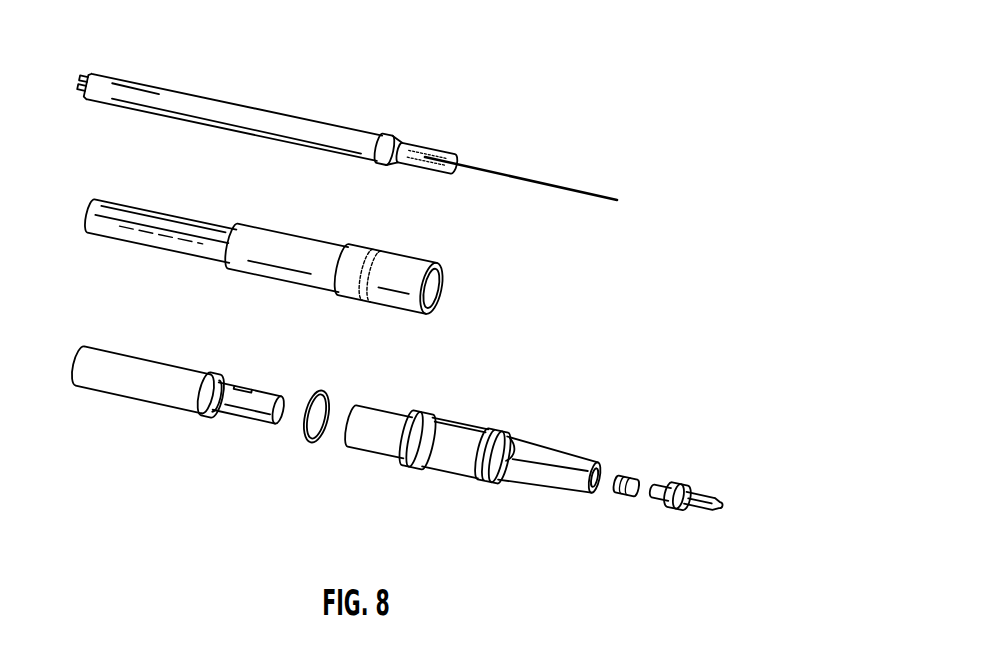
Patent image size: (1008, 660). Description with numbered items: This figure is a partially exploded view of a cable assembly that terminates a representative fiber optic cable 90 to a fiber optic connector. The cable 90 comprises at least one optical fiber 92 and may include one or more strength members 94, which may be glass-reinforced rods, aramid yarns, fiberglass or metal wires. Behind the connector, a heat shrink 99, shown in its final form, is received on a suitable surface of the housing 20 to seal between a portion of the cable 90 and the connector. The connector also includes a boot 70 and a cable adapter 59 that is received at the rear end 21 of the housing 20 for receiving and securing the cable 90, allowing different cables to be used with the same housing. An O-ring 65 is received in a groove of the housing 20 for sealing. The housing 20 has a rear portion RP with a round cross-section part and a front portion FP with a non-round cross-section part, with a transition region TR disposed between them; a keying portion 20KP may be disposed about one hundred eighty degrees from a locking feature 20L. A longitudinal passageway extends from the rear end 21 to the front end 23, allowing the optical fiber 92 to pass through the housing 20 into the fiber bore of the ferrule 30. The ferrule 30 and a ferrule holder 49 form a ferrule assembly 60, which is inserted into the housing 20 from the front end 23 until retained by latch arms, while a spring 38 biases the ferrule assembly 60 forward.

The fiber optic cable 90 is at (203, 96).
The strength members 94 is at (433, 153).
The optical fiber 92 is at (558, 187).
The heat shrink 99 is at (335, 252).
The boot 70 is at (163, 373).
The cable adapter 59 is at (250, 424).
The O-ring 65 is at (313, 444).
The housing 20 is at (472, 442).
The rear end 21 is at (353, 410).
The rear portion RP is at (463, 420).
The keying portion 20KP is at (483, 423).
The locking feature 20L is at (483, 483).
The transition region TR is at (507, 432).
The front portion FP is at (537, 490).
The front end 23 is at (597, 500).
The spring 38 is at (618, 477).
The ferrule assembly 60 is at (700, 477).
The ferrule holder 49 is at (675, 508).
The ferrule 30 is at (707, 497).